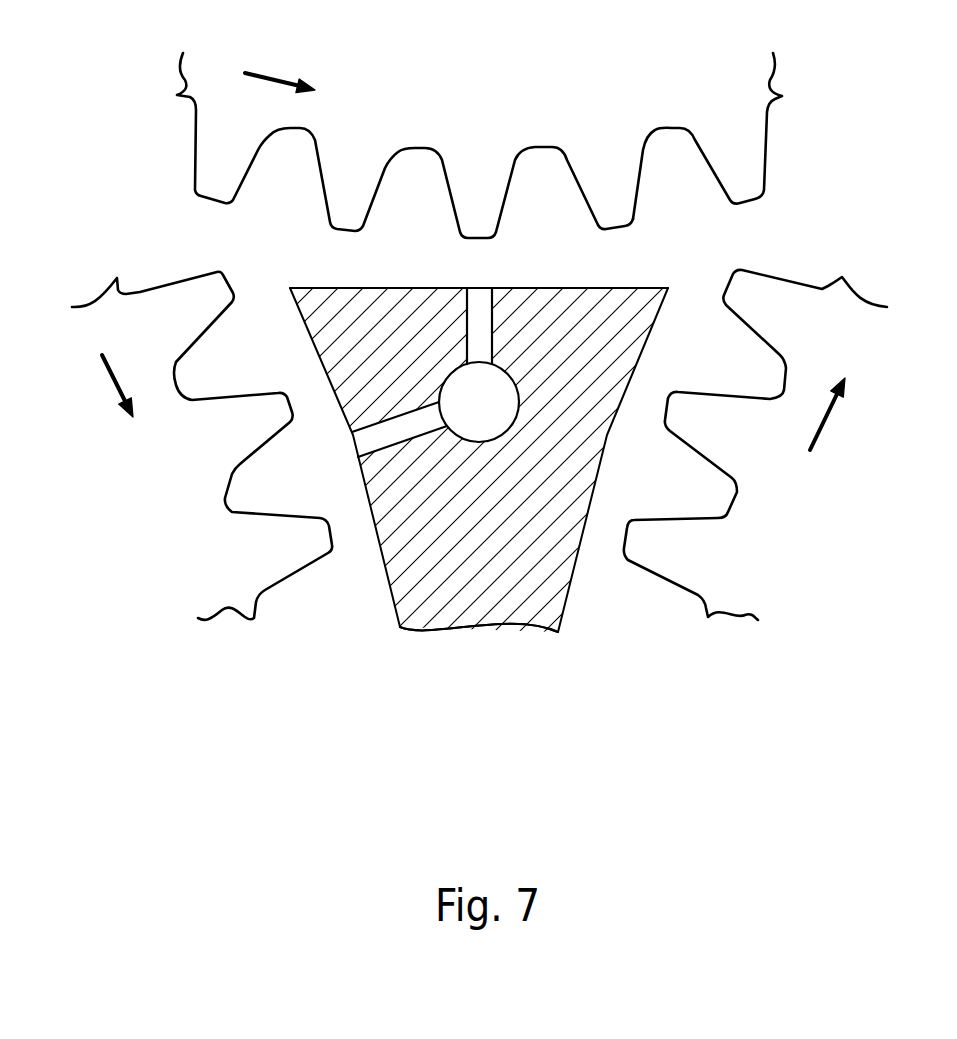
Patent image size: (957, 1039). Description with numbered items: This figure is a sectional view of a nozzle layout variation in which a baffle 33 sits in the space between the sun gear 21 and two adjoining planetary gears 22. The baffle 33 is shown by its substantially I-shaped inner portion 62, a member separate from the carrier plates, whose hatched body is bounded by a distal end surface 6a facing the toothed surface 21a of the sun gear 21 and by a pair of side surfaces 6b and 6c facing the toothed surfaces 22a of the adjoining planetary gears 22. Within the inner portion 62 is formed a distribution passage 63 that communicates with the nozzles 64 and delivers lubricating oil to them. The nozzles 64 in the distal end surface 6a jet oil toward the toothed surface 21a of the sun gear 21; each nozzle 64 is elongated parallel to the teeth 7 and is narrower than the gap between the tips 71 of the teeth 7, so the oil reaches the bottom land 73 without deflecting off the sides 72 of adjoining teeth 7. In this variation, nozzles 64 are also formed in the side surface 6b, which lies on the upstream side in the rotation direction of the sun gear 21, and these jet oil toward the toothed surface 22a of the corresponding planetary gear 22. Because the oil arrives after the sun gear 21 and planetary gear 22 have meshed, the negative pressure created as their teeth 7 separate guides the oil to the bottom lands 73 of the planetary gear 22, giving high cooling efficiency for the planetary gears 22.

The sun gear 21 is at (190, 138).
The toothed surface of the sun gear 21a is at (257, 168).
The planetary gear 22 is at (168, 277).
The toothed surface of the planetary gear 22a is at (205, 330).
The teeth 7 is at (607, 173).
The tips of the teeth 71 is at (233, 293).
The sides of the teeth 72 is at (145, 370).
The bottom land 73 is at (548, 147).
The inner portion 62 is at (468, 603).
The baffle 33 is at (479, 695).
The distribution passage 63 is at (483, 418).
The nozzles 64 is at (483, 310).
The distal end surface 6a is at (387, 287).
The side surface 6b is at (373, 493).
The side surface 6c is at (600, 463).